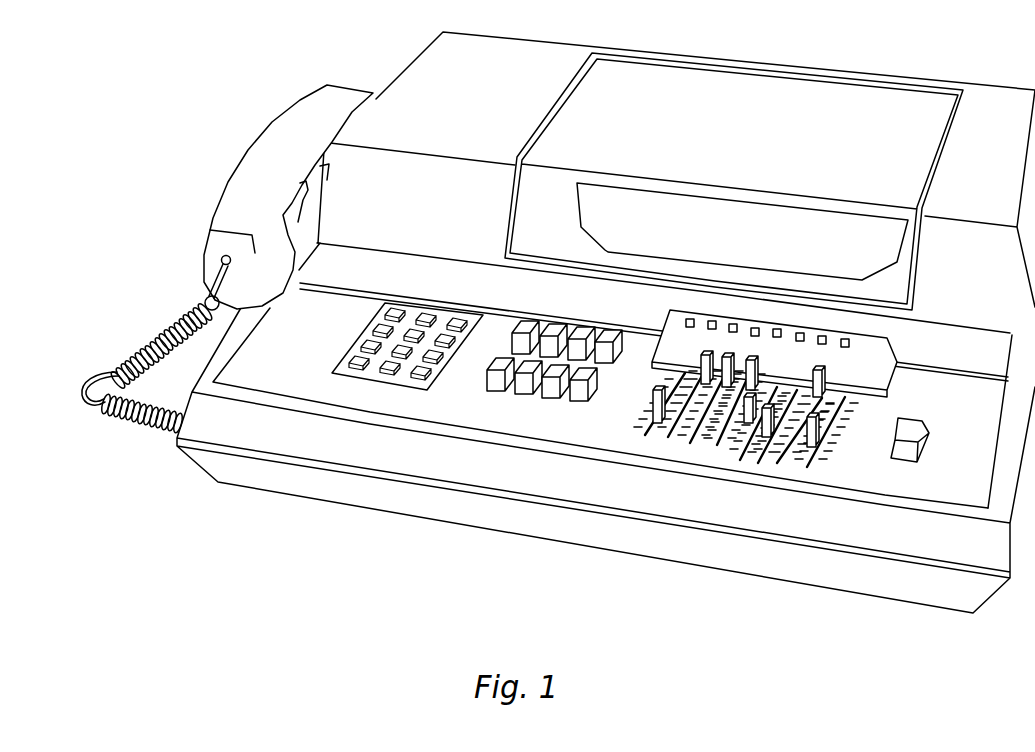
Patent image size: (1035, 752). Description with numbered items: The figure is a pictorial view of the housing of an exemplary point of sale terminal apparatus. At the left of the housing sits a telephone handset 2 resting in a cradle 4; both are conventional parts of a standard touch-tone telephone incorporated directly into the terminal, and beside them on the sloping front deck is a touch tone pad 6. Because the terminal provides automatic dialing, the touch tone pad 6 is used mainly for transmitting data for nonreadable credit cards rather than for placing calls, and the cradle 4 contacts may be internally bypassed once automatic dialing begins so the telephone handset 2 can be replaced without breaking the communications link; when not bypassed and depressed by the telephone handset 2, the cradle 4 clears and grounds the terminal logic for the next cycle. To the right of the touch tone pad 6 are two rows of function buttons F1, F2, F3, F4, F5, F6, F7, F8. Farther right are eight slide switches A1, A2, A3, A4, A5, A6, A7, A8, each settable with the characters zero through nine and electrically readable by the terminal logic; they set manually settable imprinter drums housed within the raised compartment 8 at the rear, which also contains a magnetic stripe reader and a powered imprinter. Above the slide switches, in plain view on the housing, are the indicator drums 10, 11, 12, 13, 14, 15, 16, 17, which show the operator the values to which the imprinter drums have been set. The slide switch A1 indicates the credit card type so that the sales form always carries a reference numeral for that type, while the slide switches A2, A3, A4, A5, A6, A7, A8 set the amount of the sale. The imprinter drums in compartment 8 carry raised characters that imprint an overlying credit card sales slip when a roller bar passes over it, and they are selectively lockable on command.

The telephone handset 2 is at (288, 115).
The handset cradle 4 is at (298, 200).
The touch tone pad 6 is at (382, 403).
The compartment 8 is at (918, 250).
The indicator drum 10 is at (689, 318).
The indicator drum 11 is at (711, 320).
The indicator drum 12 is at (733, 323).
The indicator drum 13 is at (755, 327).
The indicator drum 14 is at (777, 328).
The indicator drum 15 is at (800, 332).
The indicator drum 16 is at (822, 335).
The indicator drum 17 is at (845, 338).
The function button F1 is at (520, 320).
The function button F2 is at (548, 323).
The function button F3 is at (576, 326).
The function button F4 is at (604, 329).
The function button F5 is at (497, 391).
The function button F6 is at (525, 394).
The function button F7 is at (552, 398).
The function button F8 is at (580, 401).
The slide switch A1 is at (653, 394).
The slide switch A2 is at (704, 355).
The slide switch A3 is at (728, 357).
The slide switch A4 is at (752, 360).
The slide switch A5 is at (743, 422).
The slide switch A6 is at (763, 436).
The slide switch A7 is at (822, 372).
The slide switch A8 is at (817, 438).